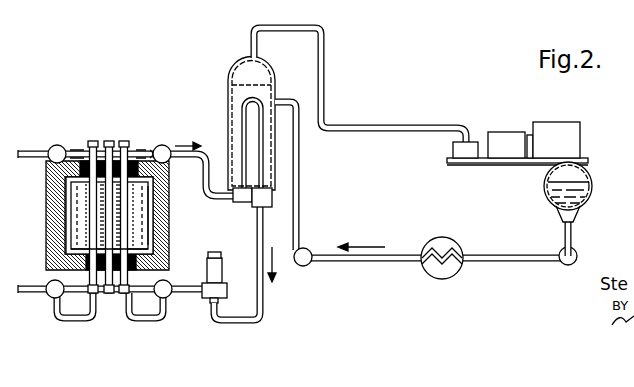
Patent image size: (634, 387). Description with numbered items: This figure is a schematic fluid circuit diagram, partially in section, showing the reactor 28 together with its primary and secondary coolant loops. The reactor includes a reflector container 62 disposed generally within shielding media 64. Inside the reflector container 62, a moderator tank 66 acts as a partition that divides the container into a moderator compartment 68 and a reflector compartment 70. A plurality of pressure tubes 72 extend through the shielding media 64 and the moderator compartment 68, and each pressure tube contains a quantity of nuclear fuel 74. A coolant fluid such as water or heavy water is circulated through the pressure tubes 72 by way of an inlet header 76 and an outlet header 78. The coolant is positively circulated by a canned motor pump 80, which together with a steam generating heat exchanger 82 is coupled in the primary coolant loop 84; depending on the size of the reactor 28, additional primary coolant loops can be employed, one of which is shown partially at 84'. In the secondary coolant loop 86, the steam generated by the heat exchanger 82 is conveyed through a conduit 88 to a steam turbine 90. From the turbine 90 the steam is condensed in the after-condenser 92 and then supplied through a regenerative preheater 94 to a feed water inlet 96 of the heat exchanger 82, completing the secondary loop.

The reactor 28 is at (200, 231).
The reflector container 62 is at (141, 152).
The shielding media 64 is at (50, 190).
The moderator tank 66 is at (148, 202).
The moderator compartment 68 is at (78, 152).
The reflector compartment 70 is at (150, 246).
The pressure tubes 72 is at (121, 141).
The nuclear fuel 74 is at (70, 220).
The inlet header 76 is at (167, 282).
The outlet header 78 is at (167, 146).
The canned motor pump 80 is at (224, 292).
The steam generating heat exchanger 82 is at (237, 63).
The primary coolant loop 84 is at (219, 266).
The additional primary coolant loop 84' is at (125, 223).
The secondary coolant loop 86 is at (287, 90).
The conduit 88 is at (413, 123).
The steam turbine 90 is at (507, 131).
The after-condenser 92 is at (545, 195).
The regenerative preheater 94 is at (445, 239).
The feed water inlet 96 is at (298, 106).